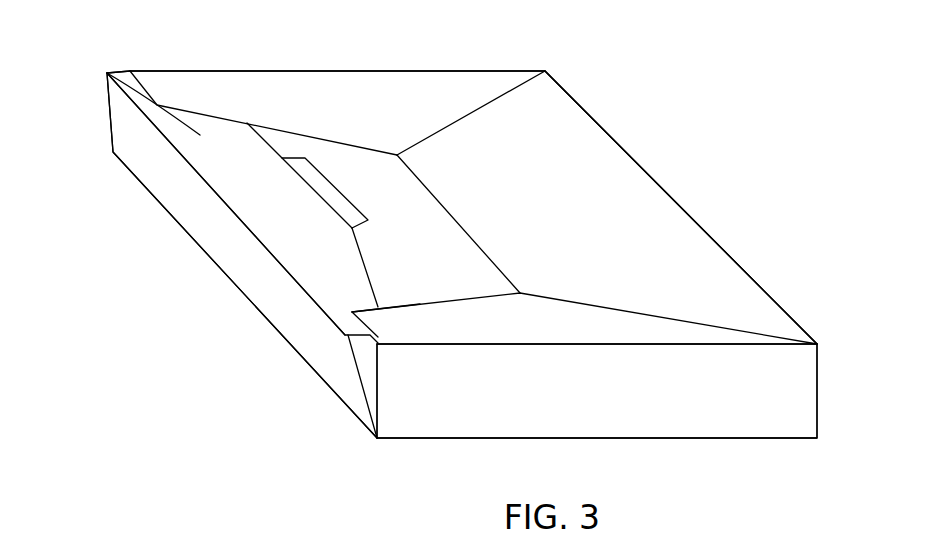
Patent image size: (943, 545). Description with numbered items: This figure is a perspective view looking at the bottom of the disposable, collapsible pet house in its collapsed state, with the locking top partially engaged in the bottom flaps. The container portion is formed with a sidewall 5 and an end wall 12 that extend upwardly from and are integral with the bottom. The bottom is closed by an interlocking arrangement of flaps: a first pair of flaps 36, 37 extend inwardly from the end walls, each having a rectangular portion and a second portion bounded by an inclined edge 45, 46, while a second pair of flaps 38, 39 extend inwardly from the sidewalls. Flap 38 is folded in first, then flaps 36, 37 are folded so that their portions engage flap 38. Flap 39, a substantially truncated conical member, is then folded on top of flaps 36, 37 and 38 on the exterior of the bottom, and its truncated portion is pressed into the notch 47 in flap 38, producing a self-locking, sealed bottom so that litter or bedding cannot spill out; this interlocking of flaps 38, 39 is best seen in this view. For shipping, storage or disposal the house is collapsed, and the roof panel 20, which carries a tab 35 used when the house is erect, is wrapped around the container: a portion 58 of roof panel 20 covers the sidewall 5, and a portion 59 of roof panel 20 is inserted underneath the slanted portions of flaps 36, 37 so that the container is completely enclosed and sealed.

The roof panel 20 is at (193, 257).
The end wall 12 is at (758, 422).
The flap 36 is at (388, 97).
The flap 39 is at (640, 195).
The notch 47 is at (455, 220).
The inclined edge 45 is at (186, 110).
The tab 35 is at (302, 168).
The flap 38 is at (384, 237).
The portion of roof panel 59 is at (106, 73).
The portion of roof panel 58 is at (193, 222).
The sidewall 5 is at (365, 363).
The flap 37 is at (588, 322).
The inclined edge 46 is at (417, 305).